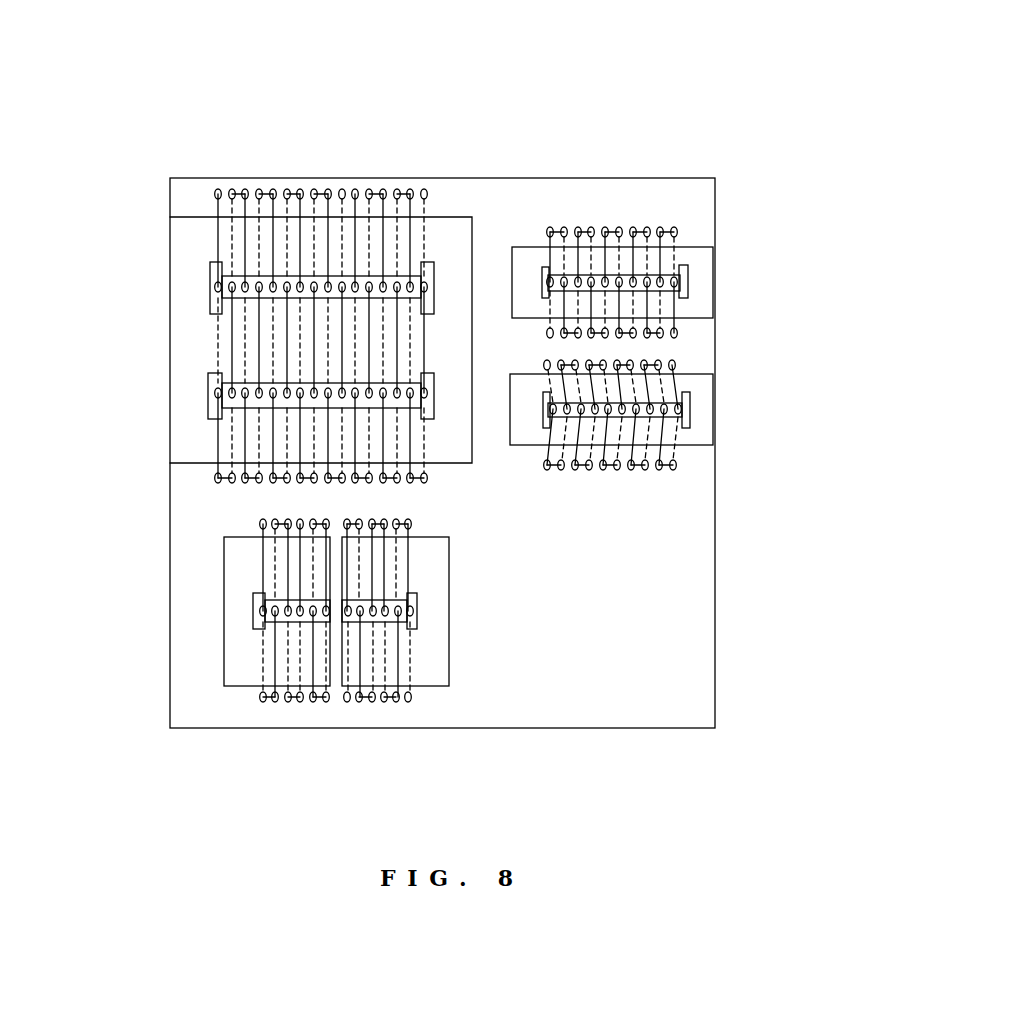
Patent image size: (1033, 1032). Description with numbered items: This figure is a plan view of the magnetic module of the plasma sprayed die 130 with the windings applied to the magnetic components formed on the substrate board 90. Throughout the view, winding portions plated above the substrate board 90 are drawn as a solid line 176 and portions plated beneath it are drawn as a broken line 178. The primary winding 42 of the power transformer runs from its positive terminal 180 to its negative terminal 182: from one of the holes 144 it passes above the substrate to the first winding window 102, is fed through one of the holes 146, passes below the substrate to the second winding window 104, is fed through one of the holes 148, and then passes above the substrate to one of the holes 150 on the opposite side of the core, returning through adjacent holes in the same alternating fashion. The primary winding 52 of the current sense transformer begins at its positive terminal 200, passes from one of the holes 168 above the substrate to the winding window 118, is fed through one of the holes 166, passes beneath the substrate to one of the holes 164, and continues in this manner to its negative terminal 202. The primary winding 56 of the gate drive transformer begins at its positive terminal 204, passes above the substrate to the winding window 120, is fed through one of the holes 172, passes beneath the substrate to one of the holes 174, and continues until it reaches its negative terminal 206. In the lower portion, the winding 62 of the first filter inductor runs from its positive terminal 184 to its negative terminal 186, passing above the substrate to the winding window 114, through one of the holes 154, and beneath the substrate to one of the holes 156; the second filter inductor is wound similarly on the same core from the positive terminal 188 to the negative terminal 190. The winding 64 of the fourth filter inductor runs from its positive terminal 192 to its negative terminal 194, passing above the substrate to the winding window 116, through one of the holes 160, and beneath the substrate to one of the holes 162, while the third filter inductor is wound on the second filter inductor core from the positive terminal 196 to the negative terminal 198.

The plasma sprayed die 130 is at (722, 122).
The substrate board 90 is at (590, 628).
The solid line 176 is at (217, 240).
The positive terminal 180 is at (218, 188).
The power transformer winding holes 144 is at (302, 188).
The negative terminal 182 is at (424, 188).
The broken line 178 is at (421, 237).
The first winding window 102 is at (212, 262).
The power transformer winding holes 146 is at (212, 287).
The primary winding 42 is at (210, 333).
The second winding window 104 is at (205, 422).
The power transformer winding holes 148 is at (217, 393).
The power transformer winding holes 150 is at (217, 478).
The primary winding 52 is at (545, 260).
The current sense transformer winding holes 164 is at (678, 231).
The winding window 118 is at (692, 260).
The current sense transformer winding holes 166 is at (680, 279).
The positive terminal 200 is at (677, 332).
The negative terminal 202 is at (546, 332).
The current sense transformer winding holes 168 is at (682, 333).
The primary winding 56 is at (680, 443).
The negative terminal 206 is at (545, 365).
The positive terminal 204 is at (675, 365).
The winding window 120 is at (692, 425).
The gate drive transformer winding holes 172 is at (687, 408).
The gate drive transformer winding holes 174 is at (618, 472).
The winding 62 is at (258, 566).
The positive terminal 184 is at (262, 523).
The positive terminal 188 is at (299, 520).
The winding window 114 is at (255, 632).
The filter inductor winding holes 154 is at (257, 610).
The filter inductor winding holes 156 is at (257, 698).
The negative terminal 186 is at (290, 702).
The negative terminal 190 is at (328, 702).
The winding 64 is at (410, 643).
The positive terminal 196 is at (372, 520).
The positive terminal 192 is at (410, 523).
The winding window 116 is at (422, 592).
The filter inductor winding holes 160 is at (417, 610).
The filter inductor winding holes 162 is at (415, 700).
The negative terminal 198 is at (347, 702).
The negative terminal 194 is at (390, 702).